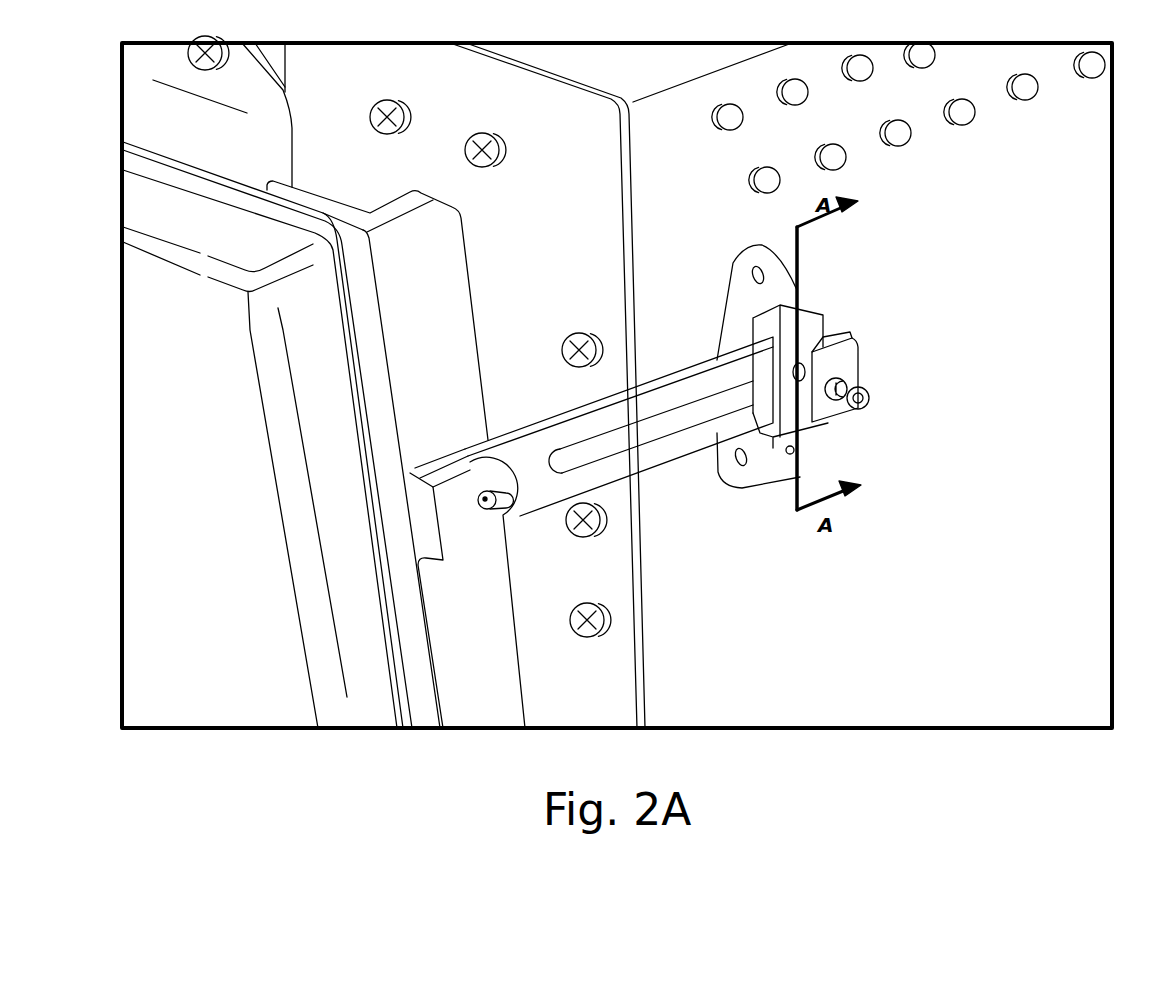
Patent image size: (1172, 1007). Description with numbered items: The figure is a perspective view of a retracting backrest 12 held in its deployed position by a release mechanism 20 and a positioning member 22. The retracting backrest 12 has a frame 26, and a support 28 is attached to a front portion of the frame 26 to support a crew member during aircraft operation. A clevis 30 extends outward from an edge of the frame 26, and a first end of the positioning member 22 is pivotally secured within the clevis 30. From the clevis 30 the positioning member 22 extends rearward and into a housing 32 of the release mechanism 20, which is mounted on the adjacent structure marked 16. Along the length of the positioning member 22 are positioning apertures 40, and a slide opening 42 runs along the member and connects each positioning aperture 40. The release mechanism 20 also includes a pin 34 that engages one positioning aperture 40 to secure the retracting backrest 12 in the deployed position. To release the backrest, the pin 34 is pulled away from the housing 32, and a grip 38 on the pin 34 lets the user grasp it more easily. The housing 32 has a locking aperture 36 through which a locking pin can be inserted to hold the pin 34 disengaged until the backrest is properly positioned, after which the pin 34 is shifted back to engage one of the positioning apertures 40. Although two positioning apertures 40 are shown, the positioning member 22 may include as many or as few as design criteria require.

The retracting backrest 12 is at (325, 201).
The cabinet side panel 16 is at (1020, 523).
The release mechanism 20 is at (832, 365).
The positioning member 22 is at (619, 415).
The frame 26 is at (440, 263).
The support 28 is at (209, 548).
The clevis 30 is at (460, 527).
The housing 32 is at (803, 310).
The pin 34 is at (870, 400).
The locking aperture 36 is at (800, 372).
The grip 38 is at (838, 380).
The positioning aperture 40 is at (553, 462).
The slide opening 42 is at (669, 422).